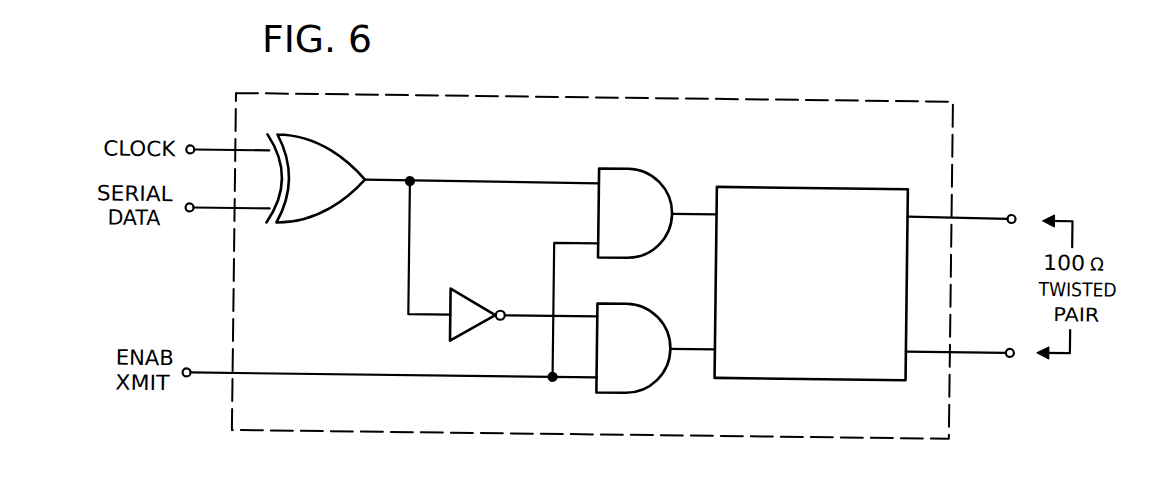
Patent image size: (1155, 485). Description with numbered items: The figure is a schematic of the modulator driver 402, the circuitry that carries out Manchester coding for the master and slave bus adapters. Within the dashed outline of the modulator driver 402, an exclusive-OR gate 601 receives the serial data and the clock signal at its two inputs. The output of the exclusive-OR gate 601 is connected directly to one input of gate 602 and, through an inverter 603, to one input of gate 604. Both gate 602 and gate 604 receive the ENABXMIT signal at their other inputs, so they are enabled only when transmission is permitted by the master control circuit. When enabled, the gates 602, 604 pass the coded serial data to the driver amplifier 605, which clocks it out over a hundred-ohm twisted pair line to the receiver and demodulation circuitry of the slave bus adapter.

The modulator driver 402 is at (778, 91).
The exclusive-OR gate 601 is at (314, 149).
The gate 602 is at (628, 176).
The inverter 603 is at (464, 299).
The gate 604 is at (625, 315).
The driver amplifier 605 is at (778, 186).